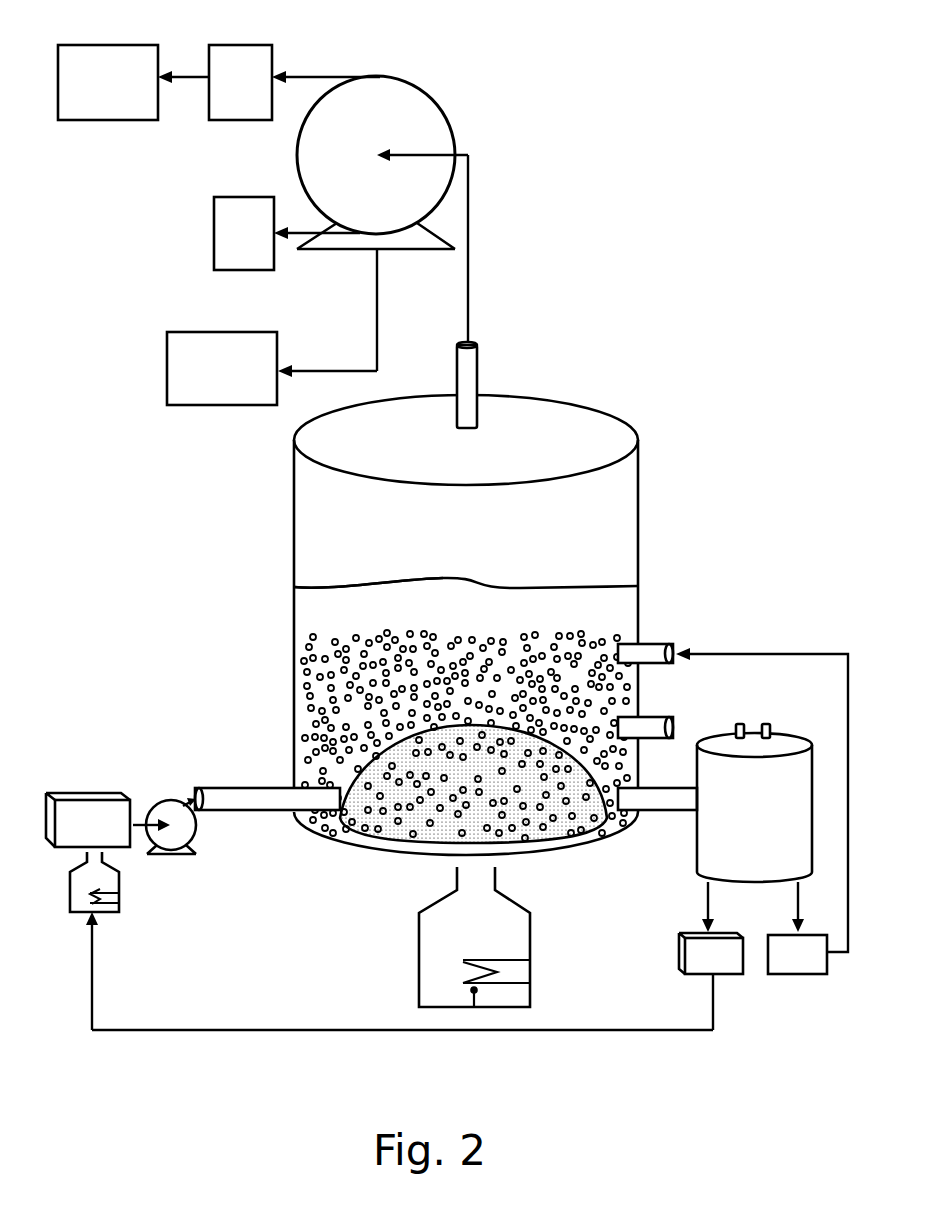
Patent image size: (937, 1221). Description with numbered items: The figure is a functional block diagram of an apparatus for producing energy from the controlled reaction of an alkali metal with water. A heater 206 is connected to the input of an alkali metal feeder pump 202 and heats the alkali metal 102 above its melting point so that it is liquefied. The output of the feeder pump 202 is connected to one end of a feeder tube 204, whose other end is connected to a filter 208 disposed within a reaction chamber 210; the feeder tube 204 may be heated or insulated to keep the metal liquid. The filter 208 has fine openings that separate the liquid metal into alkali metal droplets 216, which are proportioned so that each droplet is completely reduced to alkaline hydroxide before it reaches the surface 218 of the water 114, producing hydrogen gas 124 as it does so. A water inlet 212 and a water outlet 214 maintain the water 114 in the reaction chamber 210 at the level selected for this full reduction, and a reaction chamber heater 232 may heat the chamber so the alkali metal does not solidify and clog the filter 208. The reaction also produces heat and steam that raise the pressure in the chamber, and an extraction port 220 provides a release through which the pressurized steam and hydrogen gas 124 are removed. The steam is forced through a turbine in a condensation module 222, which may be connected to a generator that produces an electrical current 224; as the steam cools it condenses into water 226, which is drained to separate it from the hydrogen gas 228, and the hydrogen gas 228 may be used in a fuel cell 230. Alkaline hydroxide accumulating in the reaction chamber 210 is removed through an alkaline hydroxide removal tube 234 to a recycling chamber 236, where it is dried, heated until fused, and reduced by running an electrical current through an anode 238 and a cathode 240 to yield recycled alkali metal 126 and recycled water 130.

The alkali metal 102 is at (70, 805).
The water 114 is at (466, 597).
The hydrogen gas 124 is at (557, 548).
The recycled alkali metal 126 is at (697, 952).
The recycled water 130 is at (786, 975).
The alkali metal feeder pump 202 is at (170, 806).
The feeder tube 204 is at (255, 796).
The heater 206 is at (78, 905).
The filter 208 is at (407, 830).
The reaction chamber 210 is at (466, 462).
The water inlet 212 is at (653, 642).
The water outlet 214 is at (660, 719).
The alkali metal droplets 216 is at (318, 698).
The surface of the water 218 is at (323, 584).
The extraction port 220 is at (465, 383).
The condensation module 222 is at (443, 128).
The electrical current 224 is at (180, 406).
The water 226 is at (215, 257).
The hydrogen gas 228 is at (222, 121).
The fuel cell 230 is at (75, 121).
The reaction chamber heater 232 is at (433, 945).
The alkaline hydroxide removal tube 234 is at (655, 802).
The recycling chamber 236 is at (754, 832).
The anode 238 is at (739, 724).
The cathode 240 is at (766, 724).